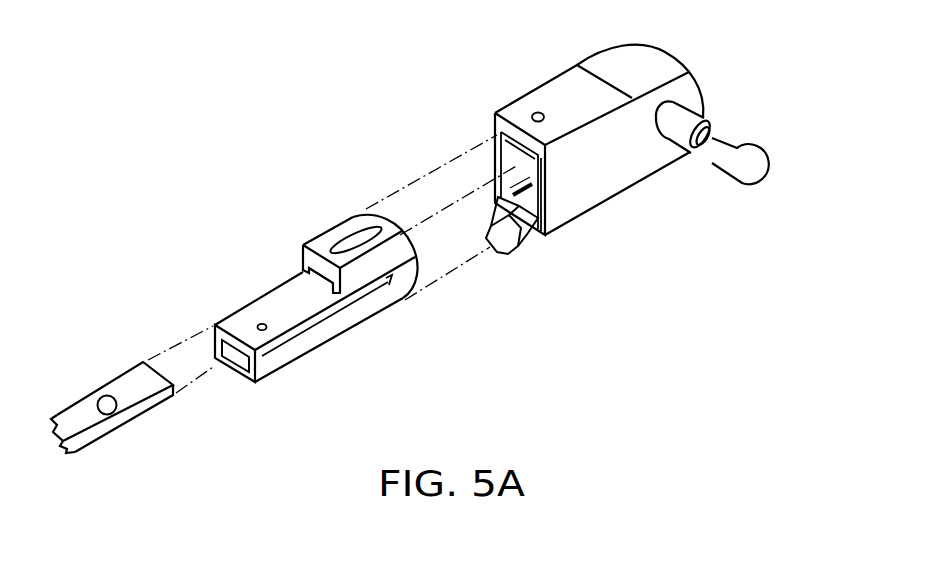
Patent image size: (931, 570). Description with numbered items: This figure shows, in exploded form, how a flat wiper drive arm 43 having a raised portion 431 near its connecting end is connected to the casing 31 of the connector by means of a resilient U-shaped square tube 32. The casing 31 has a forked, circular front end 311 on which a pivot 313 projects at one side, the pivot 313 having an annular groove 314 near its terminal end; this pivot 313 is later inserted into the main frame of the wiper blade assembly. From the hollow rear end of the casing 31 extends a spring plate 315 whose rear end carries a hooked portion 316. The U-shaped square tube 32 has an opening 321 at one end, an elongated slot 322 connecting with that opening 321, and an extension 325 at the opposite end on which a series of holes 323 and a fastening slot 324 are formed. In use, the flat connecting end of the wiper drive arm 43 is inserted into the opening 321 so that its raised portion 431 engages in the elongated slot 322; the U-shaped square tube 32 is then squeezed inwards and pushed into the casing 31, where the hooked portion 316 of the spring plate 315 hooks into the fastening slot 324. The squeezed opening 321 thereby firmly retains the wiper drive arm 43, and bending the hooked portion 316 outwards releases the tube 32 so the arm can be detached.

The casing 31 is at (562, 82).
The rounded end of housing 311 is at (686, 87).
The pivot 313 is at (678, 130).
The annular groove 314 is at (709, 140).
The spring plate 315 is at (535, 200).
The hooked portion 316 is at (510, 243).
The U-shaped square tube 32 is at (366, 217).
The opening 321 is at (314, 273).
The elongated slot 322 is at (348, 240).
The holes 323 is at (262, 322).
The fastening slot 324 is at (313, 323).
The extension 325 is at (258, 372).
The wiper drive arm 43 is at (133, 378).
The raised portion 431 is at (108, 408).